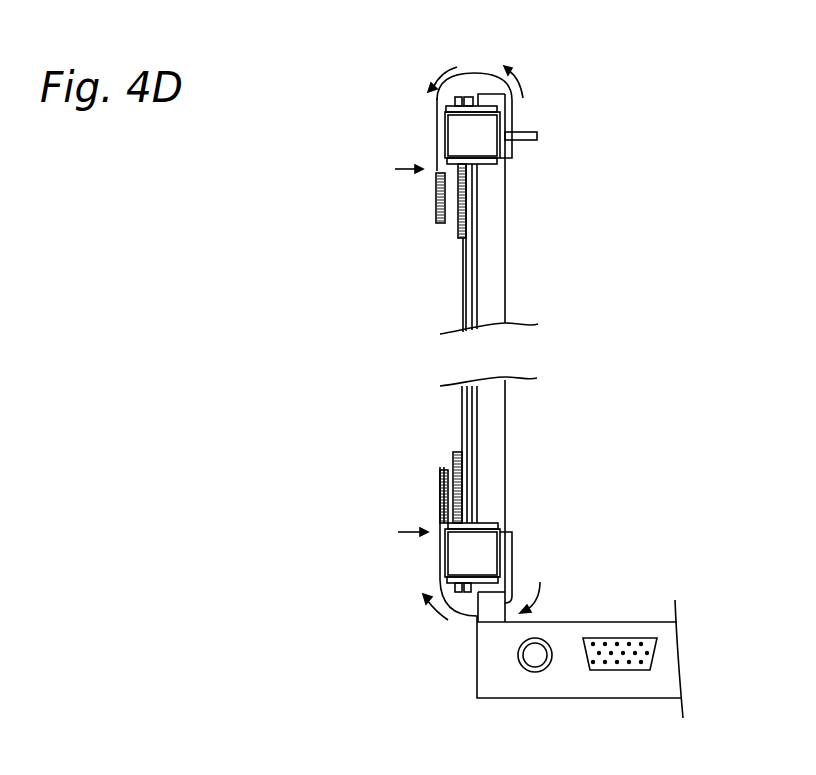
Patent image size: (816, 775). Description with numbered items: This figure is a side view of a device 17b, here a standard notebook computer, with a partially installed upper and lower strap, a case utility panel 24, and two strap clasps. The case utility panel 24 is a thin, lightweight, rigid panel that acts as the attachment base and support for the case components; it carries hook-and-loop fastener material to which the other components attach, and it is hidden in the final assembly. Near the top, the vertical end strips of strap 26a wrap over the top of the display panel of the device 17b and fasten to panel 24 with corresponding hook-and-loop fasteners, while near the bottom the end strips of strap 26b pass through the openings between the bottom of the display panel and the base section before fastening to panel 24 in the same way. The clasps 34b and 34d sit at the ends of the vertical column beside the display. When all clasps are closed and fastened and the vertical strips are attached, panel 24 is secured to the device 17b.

The case utility panel 24 is at (467, 258).
The upper bracket 34b is at (450, 109).
The strap 26a is at (490, 128).
The strap 26b is at (497, 560).
The lower bracket 34d is at (437, 582).
The device 17b is at (662, 602).